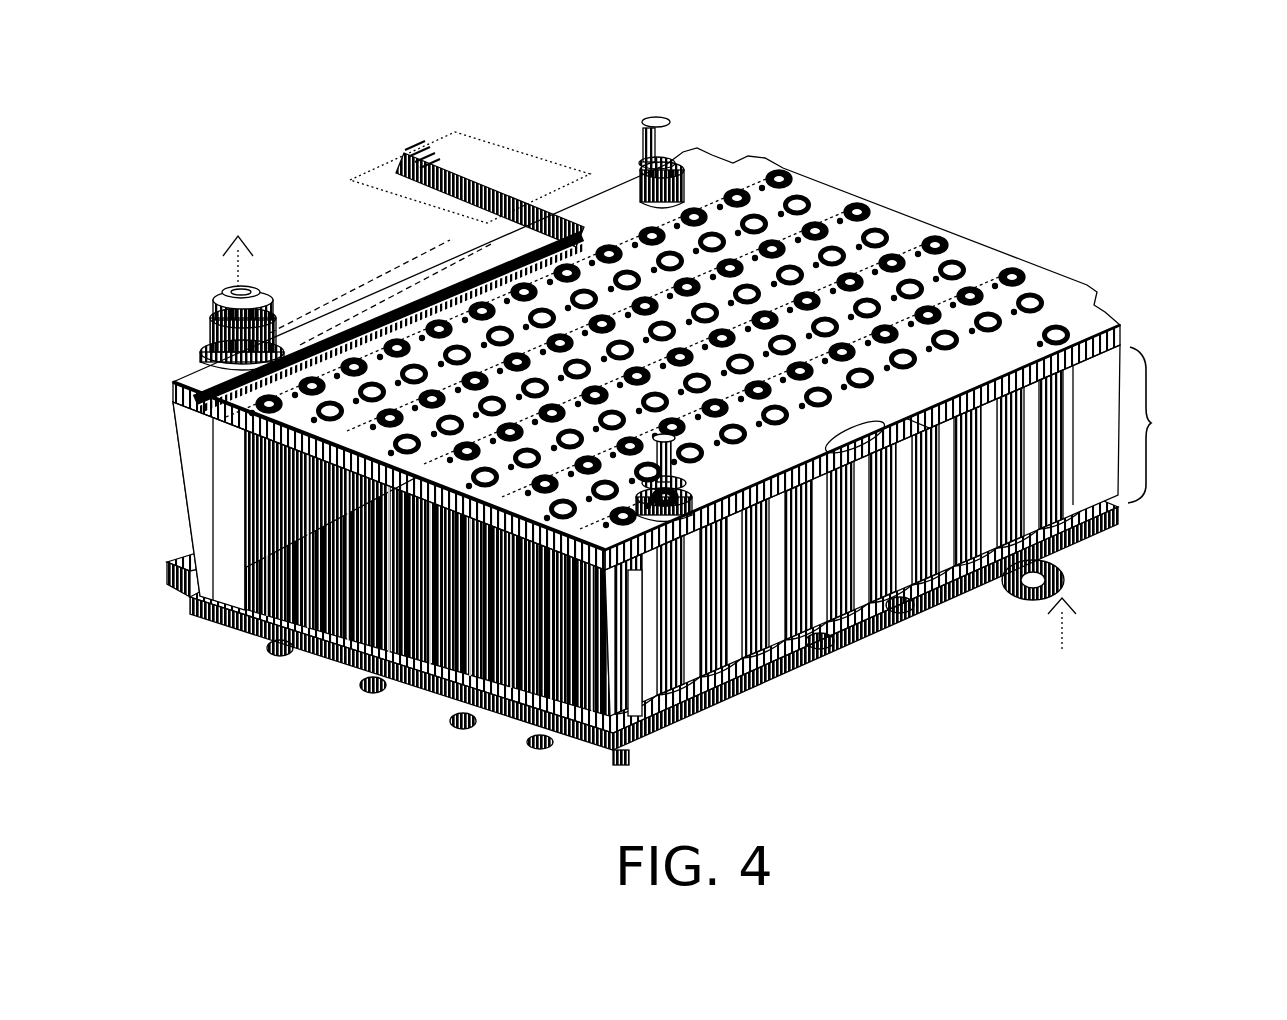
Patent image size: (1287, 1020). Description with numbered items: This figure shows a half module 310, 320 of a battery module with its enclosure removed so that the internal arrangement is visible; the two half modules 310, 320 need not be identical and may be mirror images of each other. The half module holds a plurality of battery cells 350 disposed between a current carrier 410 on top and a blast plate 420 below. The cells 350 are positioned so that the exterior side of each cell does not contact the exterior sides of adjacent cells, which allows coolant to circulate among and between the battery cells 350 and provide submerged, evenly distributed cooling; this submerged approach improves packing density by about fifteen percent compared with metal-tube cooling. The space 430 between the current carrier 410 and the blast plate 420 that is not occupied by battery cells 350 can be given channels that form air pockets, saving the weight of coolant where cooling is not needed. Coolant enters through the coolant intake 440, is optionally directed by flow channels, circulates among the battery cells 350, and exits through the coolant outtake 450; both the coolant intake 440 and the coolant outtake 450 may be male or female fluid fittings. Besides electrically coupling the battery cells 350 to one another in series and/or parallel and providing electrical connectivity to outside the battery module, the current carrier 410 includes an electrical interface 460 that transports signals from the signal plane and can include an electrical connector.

The half module 310 is at (308, 130).
The half module 320 is at (673, 427).
The battery cells 350 is at (358, 590).
The current carrier 410 is at (903, 223).
The blast plate 420 is at (829, 633).
The space 430 is at (1173, 425).
The coolant intake 440 is at (1041, 586).
The coolant outtake 450 is at (246, 291).
The electrical interface 460 is at (497, 150).